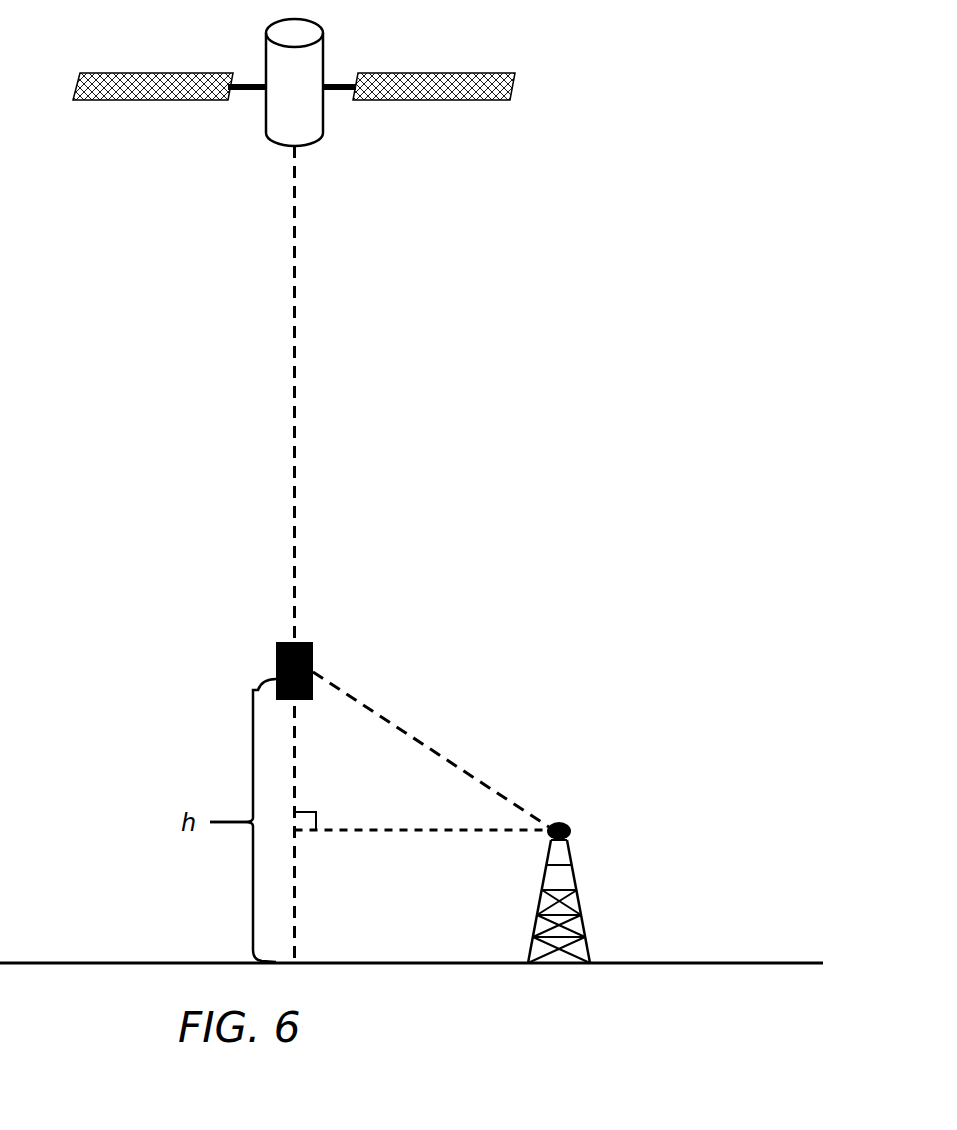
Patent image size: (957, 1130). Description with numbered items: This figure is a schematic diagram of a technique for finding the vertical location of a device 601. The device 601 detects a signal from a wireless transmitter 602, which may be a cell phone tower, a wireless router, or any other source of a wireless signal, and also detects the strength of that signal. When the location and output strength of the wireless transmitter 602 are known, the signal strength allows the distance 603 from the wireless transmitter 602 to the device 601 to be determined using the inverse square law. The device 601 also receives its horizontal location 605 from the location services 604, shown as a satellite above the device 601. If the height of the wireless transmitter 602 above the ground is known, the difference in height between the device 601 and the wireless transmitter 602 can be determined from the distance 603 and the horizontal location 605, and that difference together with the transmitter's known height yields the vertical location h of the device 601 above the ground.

The device 601 is at (273, 640).
The wireless transmitter 602 is at (585, 881).
The distance 603 is at (435, 748).
The location services 604 is at (325, 119).
The horizontal location 605 is at (297, 543).